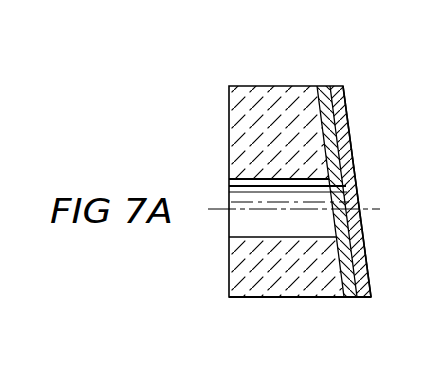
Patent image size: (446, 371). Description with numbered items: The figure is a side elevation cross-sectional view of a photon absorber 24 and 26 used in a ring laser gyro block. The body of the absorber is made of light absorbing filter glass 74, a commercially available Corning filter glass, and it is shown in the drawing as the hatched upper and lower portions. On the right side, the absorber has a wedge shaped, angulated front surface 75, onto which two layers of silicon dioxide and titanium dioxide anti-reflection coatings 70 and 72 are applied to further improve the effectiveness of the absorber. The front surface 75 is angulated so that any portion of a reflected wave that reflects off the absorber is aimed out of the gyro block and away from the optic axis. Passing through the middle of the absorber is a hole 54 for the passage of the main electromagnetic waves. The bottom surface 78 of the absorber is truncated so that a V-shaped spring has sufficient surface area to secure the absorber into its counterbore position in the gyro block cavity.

The photon absorber 24 is at (269, 164).
The photon absorber 26 is at (300, 191).
The hole 54 is at (235, 220).
The anti-reflection coating 70 is at (323, 87).
The anti-reflection coating 72 is at (337, 86).
The light absorbing filter glass 74 is at (232, 131).
The angulated front surface 75 is at (350, 147).
The bottom surface 78 is at (323, 297).